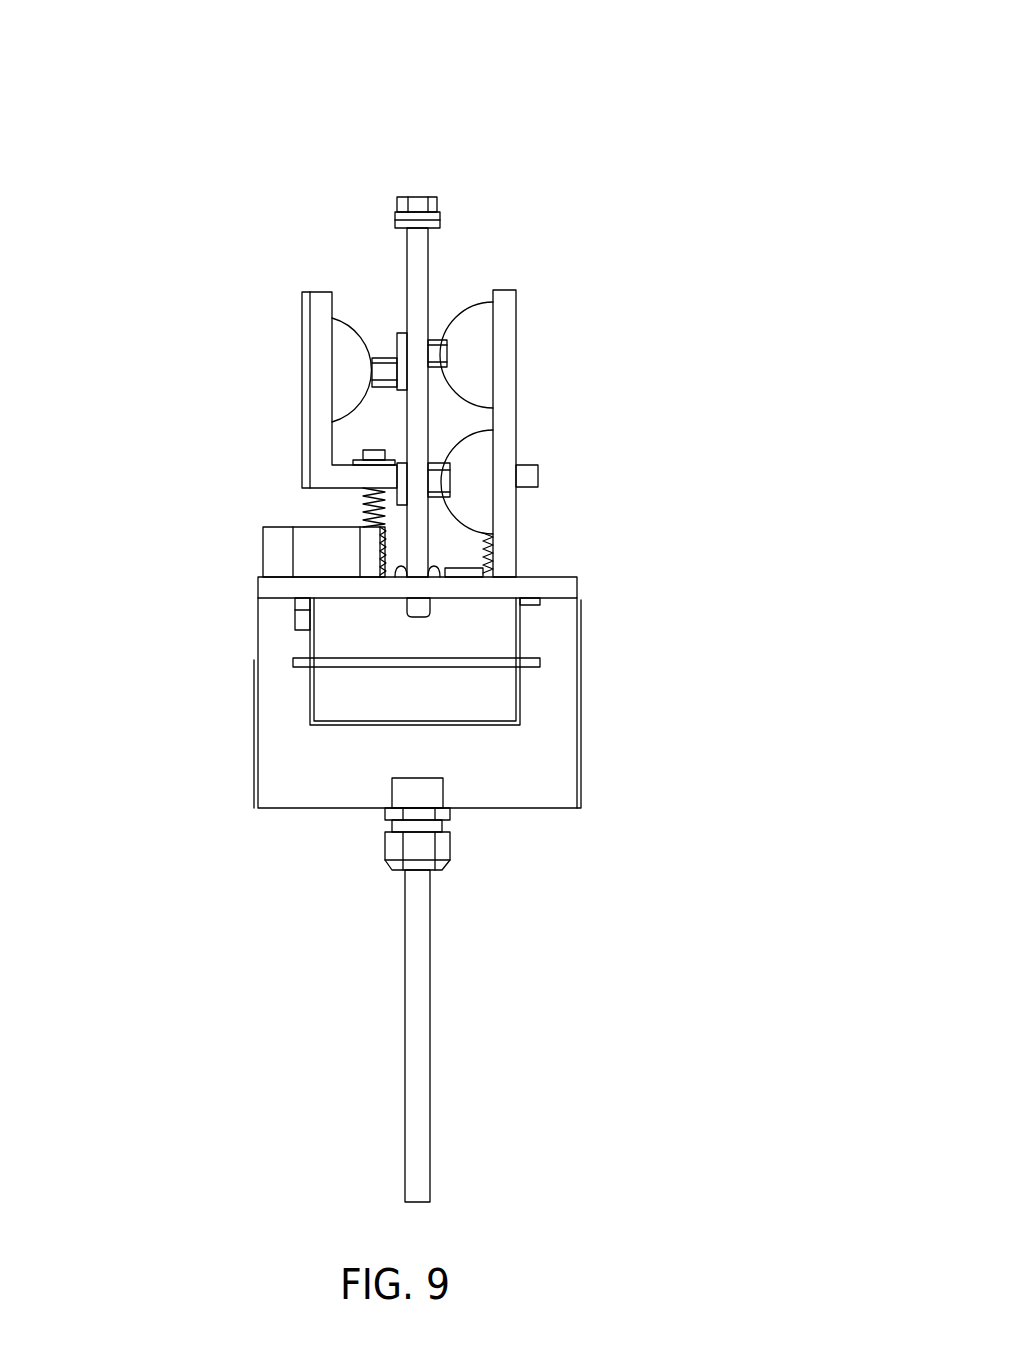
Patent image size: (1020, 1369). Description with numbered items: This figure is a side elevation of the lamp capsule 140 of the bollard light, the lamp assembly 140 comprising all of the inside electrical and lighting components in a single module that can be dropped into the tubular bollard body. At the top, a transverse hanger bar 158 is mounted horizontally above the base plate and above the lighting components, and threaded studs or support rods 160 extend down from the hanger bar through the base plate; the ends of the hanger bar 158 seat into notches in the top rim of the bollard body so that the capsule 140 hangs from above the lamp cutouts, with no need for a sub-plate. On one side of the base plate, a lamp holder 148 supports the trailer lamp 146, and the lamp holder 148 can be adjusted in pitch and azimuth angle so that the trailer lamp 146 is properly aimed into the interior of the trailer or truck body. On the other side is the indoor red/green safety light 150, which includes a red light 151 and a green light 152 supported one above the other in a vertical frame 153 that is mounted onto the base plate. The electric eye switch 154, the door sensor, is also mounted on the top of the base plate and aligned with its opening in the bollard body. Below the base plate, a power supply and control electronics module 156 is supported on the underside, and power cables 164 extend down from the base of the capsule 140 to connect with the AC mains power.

The lamp assembly 140 is at (128, 1102).
The trailer lamp 146 is at (347, 343).
The lamp holder 148 is at (320, 443).
The safety light 150 is at (710, 358).
The red light 151 is at (520, 505).
The green light 152 is at (522, 353).
The vertical frame 153 is at (507, 418).
The electric eye switch 154 is at (275, 552).
The power supply and control electronics module 156 is at (492, 690).
The hanger bar 158 is at (395, 216).
The support rod 160 is at (430, 258).
The power cables 164 is at (430, 1015).